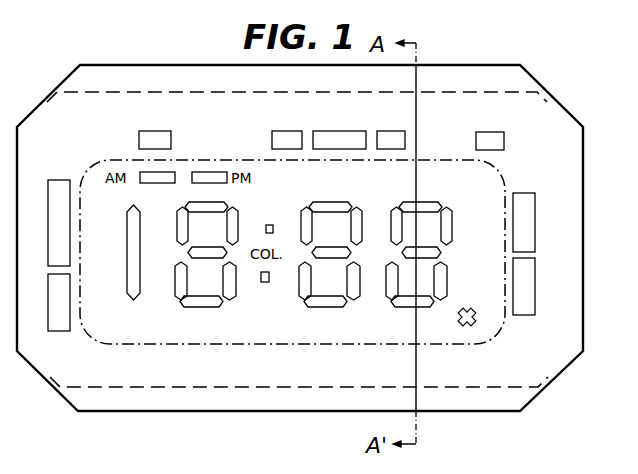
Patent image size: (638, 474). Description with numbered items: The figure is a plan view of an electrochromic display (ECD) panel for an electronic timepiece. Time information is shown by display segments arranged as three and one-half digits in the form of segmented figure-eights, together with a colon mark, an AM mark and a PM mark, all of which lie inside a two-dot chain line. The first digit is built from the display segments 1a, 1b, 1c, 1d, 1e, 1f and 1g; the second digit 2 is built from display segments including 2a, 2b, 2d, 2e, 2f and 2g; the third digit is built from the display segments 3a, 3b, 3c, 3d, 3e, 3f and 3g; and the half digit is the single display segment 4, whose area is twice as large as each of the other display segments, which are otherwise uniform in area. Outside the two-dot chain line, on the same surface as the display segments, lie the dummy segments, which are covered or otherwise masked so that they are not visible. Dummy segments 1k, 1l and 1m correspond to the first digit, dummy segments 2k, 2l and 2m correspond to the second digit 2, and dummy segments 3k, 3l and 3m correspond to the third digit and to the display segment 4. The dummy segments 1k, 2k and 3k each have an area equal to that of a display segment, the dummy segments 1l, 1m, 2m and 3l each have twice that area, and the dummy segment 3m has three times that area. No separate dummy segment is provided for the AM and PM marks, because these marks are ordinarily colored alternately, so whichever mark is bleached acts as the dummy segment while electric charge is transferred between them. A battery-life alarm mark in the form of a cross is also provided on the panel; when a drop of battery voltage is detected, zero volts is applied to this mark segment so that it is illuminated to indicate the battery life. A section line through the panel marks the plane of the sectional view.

The display segment 1a is at (411, 204).
The display segment 1b is at (452, 222).
The display segment 1c is at (448, 288).
The display segment 1d is at (432, 305).
The display segment 1e is at (385, 278).
The display segment 1f is at (391, 235).
The display segment 1g is at (440, 253).
The dummy segment 1k is at (487, 136).
The dummy segment 1l is at (530, 222).
The dummy segment 1m is at (530, 288).
The second digit 2 is at (345, 255).
The display segment 2a is at (352, 204).
The display segment 2b is at (361, 214).
The display segment 2d is at (326, 301).
The display segment 2e is at (298, 270).
The display segment 2f is at (303, 228).
The display segment 2g is at (323, 248).
The dummy segment 2k is at (286, 131).
The dummy segment 2l is at (390, 131).
The dummy segment 2m is at (339, 131).
The display segment 3a is at (188, 204).
The display segment 3b is at (238, 225).
The display segment 3c is at (233, 290).
The display segment 3d is at (205, 301).
The display segment 3e is at (177, 287).
The display segment 3f is at (178, 225).
The display segment 3g is at (200, 248).
The dummy segment 3k is at (155, 131).
The dummy segment 3l is at (51, 331).
The dummy segment 3m is at (50, 182).
The display segment 4 is at (128, 253).